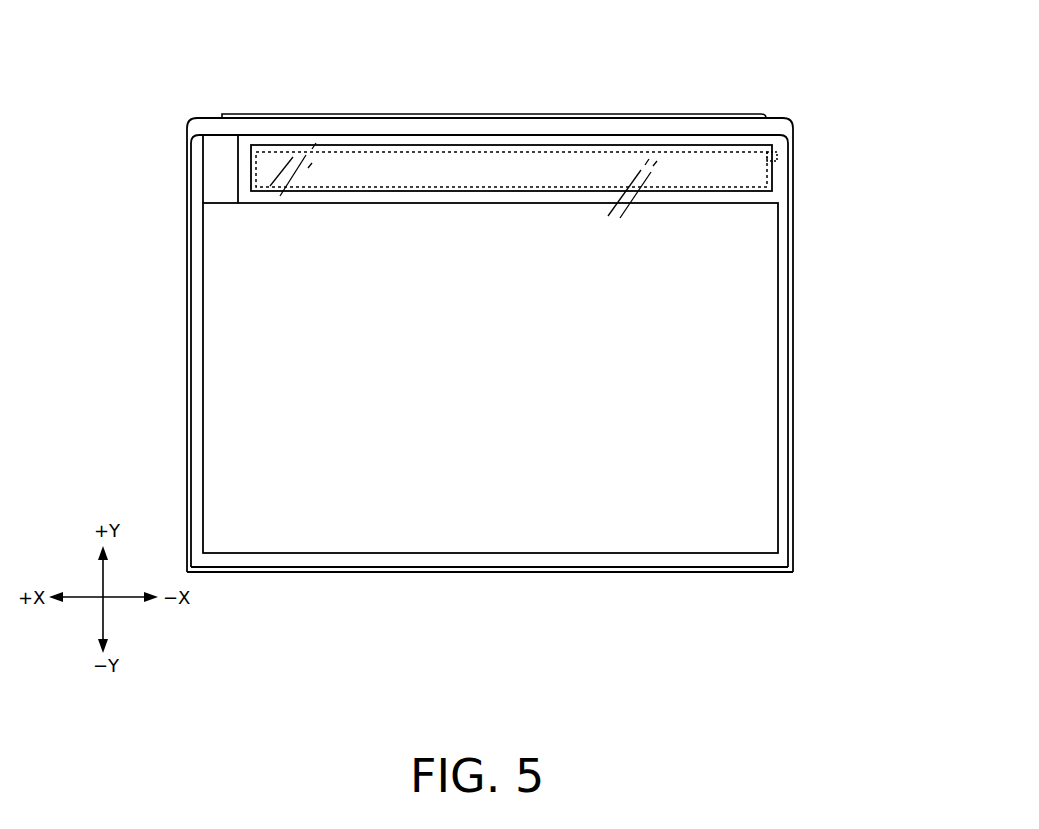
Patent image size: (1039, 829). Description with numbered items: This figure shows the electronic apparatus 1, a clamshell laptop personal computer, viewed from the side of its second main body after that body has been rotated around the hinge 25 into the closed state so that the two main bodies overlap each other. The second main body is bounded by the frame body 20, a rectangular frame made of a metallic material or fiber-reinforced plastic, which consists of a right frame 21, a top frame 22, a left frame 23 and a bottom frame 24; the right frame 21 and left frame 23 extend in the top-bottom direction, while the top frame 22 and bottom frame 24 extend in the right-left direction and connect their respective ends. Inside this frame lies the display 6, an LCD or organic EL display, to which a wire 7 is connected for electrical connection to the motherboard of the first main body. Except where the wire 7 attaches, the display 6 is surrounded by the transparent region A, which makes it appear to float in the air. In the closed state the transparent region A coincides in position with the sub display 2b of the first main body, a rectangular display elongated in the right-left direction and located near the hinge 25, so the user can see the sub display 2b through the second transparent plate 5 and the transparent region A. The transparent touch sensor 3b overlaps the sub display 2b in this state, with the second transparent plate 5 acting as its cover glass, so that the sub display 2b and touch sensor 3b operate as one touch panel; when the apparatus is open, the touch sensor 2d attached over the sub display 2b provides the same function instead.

The electronic apparatus 1 is at (172, 90).
The frame body 20 is at (806, 513).
The right frame 21 is at (794, 305).
The top frame 22 is at (488, 574).
The left frame 23 is at (186, 348).
The bottom frame 24 is at (773, 119).
The hinge 25 is at (533, 115).
The second transparent plate 5 is at (782, 440).
The display 6 is at (742, 368).
The wire 7 is at (218, 183).
The sub display 2b is at (760, 168).
The transparent region A is at (704, 134).
The touch sensor 3b is at (777, 156).
The touch sensor 2d is at (772, 156).